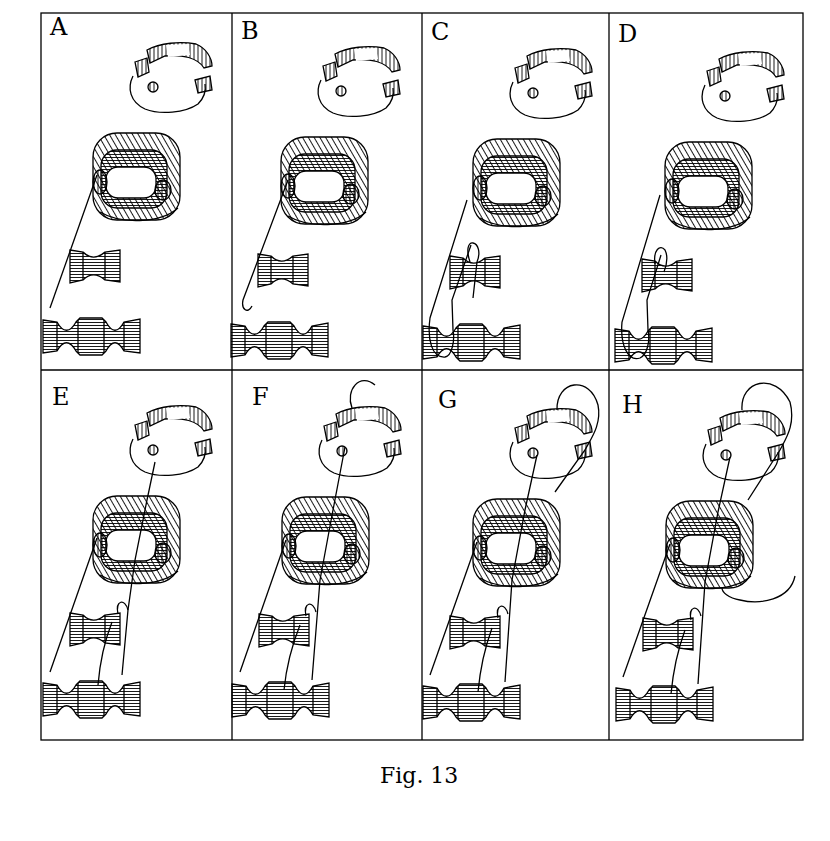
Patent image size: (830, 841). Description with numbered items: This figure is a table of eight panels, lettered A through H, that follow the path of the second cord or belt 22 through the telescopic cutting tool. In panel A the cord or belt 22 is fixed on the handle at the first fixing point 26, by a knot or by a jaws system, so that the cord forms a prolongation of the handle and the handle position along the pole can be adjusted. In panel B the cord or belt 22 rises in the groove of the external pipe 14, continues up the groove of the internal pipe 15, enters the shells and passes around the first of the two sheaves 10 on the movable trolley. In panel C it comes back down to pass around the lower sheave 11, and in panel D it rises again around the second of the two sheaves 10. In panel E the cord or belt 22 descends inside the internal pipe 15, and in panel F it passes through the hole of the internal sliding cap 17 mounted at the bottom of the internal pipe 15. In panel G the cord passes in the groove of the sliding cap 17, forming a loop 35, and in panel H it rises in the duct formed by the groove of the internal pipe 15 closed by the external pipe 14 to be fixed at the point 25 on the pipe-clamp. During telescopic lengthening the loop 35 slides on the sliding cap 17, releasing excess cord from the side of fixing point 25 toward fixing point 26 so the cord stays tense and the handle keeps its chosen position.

The sheaves mounted on the movable trolley 10 is at (398, 522).
The lower sheave 11 is at (419, 450).
The external pipe 14 is at (445, 360).
The internal pipe 15 is at (433, 413).
The internal sliding cap 17 is at (441, 262).
The second cord or belt 22 is at (390, 434).
The fixing point on the pipe-clamp 25 is at (761, 582).
The first fixing point 26 is at (408, 347).
The loop (oxbow) 35 is at (552, 395).